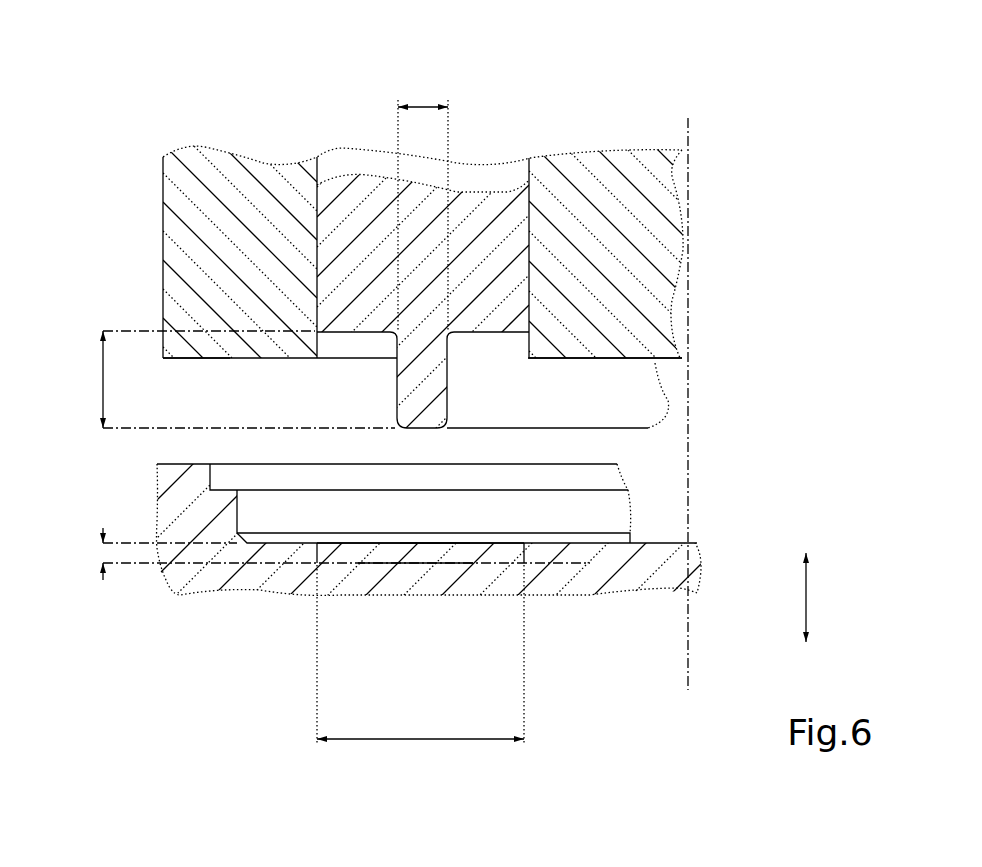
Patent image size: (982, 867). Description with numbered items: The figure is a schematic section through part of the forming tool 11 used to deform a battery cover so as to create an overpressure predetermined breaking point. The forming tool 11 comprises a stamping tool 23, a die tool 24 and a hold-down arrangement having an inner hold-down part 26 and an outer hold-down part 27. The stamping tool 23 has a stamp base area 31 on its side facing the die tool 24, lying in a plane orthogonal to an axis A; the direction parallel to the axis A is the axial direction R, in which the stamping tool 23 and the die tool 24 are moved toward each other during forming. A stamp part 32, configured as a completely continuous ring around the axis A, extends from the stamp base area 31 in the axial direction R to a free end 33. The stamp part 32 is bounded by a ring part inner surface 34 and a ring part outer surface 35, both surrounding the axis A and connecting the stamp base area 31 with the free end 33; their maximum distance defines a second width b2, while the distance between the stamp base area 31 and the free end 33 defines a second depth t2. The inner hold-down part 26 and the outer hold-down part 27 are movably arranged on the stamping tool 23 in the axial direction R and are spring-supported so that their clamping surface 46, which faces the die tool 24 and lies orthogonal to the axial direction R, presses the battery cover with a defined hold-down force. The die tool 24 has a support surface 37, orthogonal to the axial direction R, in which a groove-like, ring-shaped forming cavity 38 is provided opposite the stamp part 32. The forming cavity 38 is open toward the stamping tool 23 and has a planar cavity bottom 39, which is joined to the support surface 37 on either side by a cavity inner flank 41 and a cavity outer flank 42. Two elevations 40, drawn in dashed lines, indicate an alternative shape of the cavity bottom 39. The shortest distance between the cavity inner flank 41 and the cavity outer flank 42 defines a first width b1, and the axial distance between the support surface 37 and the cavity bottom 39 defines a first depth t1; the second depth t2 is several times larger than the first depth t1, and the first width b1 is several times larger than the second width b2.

The forming tool 11 is at (655, 75).
The stamping tool 23 is at (388, 318).
The die tool 24 is at (258, 578).
The inner hold-down part 26 is at (587, 176).
The outer hold-down part 27 is at (250, 172).
The stamp base area 31 is at (345, 333).
The stamp part 32 is at (650, 363).
The free end 33 is at (636, 428).
The ring part inner surface 34 is at (447, 378).
The ring part outer surface 35 is at (397, 380).
The support surface 37 is at (270, 537).
The forming cavity 38 is at (526, 544).
The cavity bottom 39 is at (433, 553).
The elevations 40 is at (473, 561).
The cavity inner flank 41 is at (524, 545).
The cavity outer flank 42 is at (318, 545).
The clamping surface 46 is at (191, 359).
The first width b1 is at (420, 655).
The second width b2 is at (423, 206).
The first depth t1 is at (100, 548).
The second depth t2 is at (103, 380).
The axis A is at (692, 658).
The axial direction R is at (804, 600).